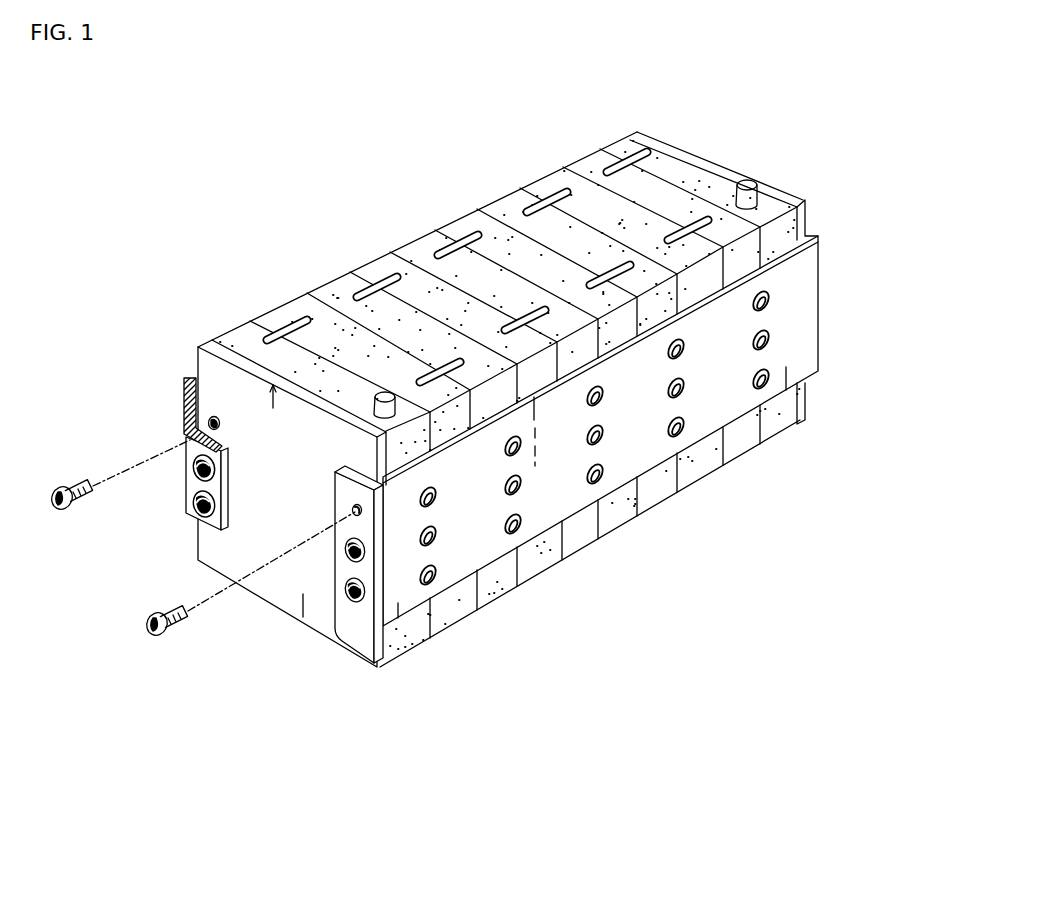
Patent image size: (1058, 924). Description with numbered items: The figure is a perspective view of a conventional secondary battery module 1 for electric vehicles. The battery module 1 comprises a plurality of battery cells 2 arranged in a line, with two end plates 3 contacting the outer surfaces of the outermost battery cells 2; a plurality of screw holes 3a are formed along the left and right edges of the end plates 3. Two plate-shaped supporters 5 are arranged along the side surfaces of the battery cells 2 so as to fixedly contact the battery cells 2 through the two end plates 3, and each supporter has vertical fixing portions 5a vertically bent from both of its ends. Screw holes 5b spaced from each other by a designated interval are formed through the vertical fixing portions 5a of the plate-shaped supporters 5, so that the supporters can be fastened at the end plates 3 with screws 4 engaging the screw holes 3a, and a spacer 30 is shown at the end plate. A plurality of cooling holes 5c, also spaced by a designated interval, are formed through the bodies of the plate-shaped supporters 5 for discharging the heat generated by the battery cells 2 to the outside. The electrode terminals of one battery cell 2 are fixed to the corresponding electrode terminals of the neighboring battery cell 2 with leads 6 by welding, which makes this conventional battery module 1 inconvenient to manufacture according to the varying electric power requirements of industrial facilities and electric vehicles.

The battery module 1 is at (207, 151).
The battery cells 2 is at (340, 292).
The end plates 3 is at (718, 163).
The screw holes 3a is at (215, 421).
The spacer 30 is at (184, 428).
The screws 4 is at (157, 636).
The plate-shaped supporters 5 is at (806, 326).
The vertical fixing portions 5a is at (184, 514).
The screw holes 5b is at (351, 510).
The cooling holes 5c is at (513, 533).
The leads 6 is at (463, 237).